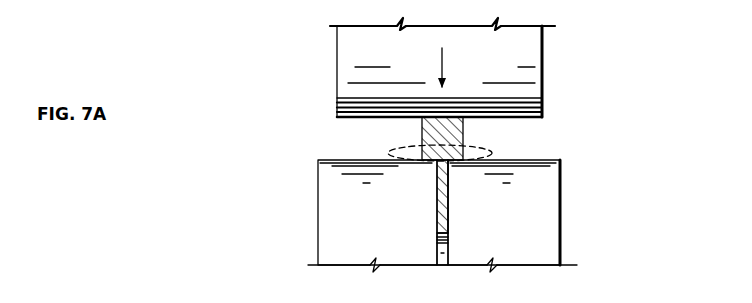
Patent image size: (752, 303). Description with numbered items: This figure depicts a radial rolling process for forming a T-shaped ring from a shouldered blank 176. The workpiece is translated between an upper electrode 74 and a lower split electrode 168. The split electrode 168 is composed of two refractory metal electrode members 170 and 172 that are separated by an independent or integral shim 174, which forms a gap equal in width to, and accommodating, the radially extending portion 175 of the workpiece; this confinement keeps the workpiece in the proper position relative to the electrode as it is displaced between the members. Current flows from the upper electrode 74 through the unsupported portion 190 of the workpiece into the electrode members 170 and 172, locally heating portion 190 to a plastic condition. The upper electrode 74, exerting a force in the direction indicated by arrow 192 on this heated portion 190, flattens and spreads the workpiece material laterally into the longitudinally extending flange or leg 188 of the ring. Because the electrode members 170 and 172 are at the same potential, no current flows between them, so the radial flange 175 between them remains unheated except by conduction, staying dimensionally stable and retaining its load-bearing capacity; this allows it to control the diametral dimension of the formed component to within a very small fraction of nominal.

The upper electrode 74 is at (336, 58).
The arrow 192 is at (444, 61).
The unsupported portion of the workpiece 190 is at (463, 128).
The longitudinally extending flange or leg 188 is at (392, 149).
The split electrode 168 is at (317, 176).
The electrode member 170 is at (318, 232).
The electrode member 172 is at (562, 209).
The radially extending portion 175 is at (437, 222).
The shouldered blank 176 is at (453, 174).
The shim 174 is at (448, 246).